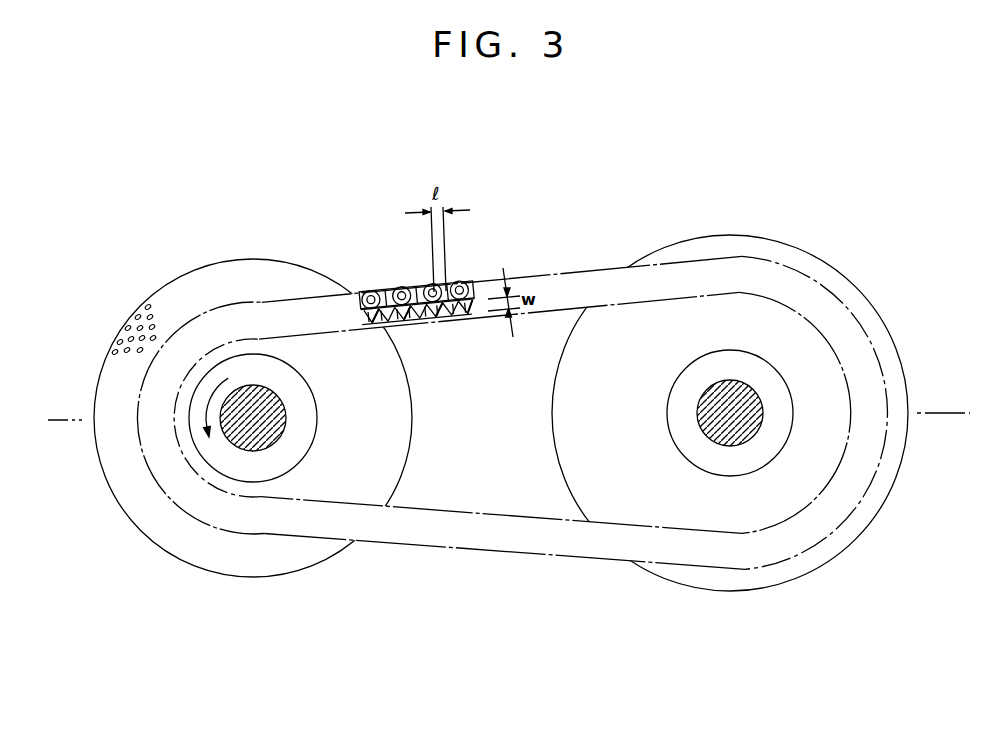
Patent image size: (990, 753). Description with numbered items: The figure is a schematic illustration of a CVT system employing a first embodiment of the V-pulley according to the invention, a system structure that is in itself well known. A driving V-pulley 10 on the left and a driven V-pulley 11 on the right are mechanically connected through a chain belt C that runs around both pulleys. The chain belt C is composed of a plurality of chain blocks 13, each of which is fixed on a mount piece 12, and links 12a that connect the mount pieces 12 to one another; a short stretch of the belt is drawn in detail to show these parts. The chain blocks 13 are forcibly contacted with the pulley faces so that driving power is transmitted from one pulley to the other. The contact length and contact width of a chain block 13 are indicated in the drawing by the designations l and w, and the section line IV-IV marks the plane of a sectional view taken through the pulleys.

The driving V-pulley 10 is at (227, 282).
The driven V-pulley 11 is at (740, 248).
The mount piece 12 is at (405, 290).
The link 12a is at (413, 290).
The chain block 13 is at (440, 323).
The chain belt C is at (575, 285).
The section line IV- IV is at (505, 418).